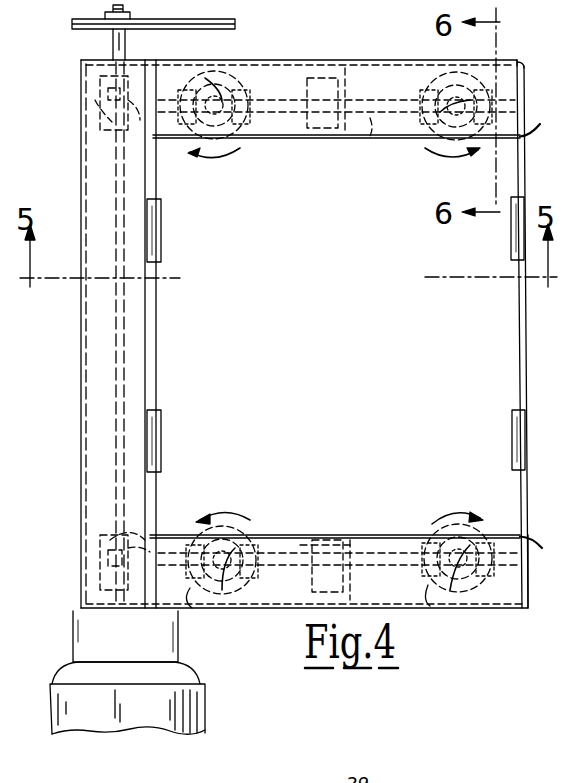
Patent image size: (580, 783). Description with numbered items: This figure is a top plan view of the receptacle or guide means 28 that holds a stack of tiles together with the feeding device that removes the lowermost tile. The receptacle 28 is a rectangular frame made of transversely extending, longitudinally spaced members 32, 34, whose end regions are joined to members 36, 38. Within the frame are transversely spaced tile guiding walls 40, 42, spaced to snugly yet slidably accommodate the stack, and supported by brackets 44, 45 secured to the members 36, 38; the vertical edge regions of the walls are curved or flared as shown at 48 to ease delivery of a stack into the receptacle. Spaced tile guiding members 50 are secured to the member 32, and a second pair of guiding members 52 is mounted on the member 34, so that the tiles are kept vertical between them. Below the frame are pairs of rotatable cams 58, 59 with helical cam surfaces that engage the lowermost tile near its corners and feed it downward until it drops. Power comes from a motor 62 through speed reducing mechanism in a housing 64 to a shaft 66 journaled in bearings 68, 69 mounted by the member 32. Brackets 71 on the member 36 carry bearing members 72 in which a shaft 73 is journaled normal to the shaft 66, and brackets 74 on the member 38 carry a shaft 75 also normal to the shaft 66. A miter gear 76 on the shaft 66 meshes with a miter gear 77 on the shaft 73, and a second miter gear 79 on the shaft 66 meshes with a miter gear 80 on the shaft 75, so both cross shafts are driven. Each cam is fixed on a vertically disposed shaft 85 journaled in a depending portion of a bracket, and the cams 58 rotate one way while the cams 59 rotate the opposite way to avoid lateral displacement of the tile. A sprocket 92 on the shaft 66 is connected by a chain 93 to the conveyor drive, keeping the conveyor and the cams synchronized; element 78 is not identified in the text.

The receptacle or guide means 28 is at (345, 52).
The transversely extending member 32 is at (157, 340).
The transversely extending member 34 is at (519, 318).
The frame member 36 is at (262, 62).
The frame member 38 is at (258, 608).
The tile guiding wall 40 is at (306, 139).
The tile guiding wall 42 is at (362, 535).
The bracket 44 is at (314, 86).
The bracket 45 is at (340, 584).
The curved or flared edge region 48 is at (532, 134).
The tile guiding member 50 is at (162, 212).
The tile guiding member 52 is at (511, 244).
The rotatable cam 58 is at (236, 150).
The rotatable cam 59 is at (428, 148).
The motor 62 is at (50, 702).
The housing 64 is at (73, 632).
The shaft 66 is at (116, 366).
The bearing 68 is at (128, 548).
The bearing 69 is at (100, 80).
The bracket 71 is at (205, 76).
The bearing member 72 is at (244, 98).
The shaft 73 is at (370, 134).
The bracket 74 is at (186, 606).
The shaft 75 is at (304, 536).
The miter gear 76 is at (98, 126).
The miter gear 77 is at (130, 64).
The side element 78 is at (574, 573).
The miter gear 79 is at (120, 570).
The miter gear 80 is at (118, 540).
The vertically disposed shaft 85 is at (206, 78).
The sprocket 92 is at (85, 29).
The chain 93 is at (236, 19).